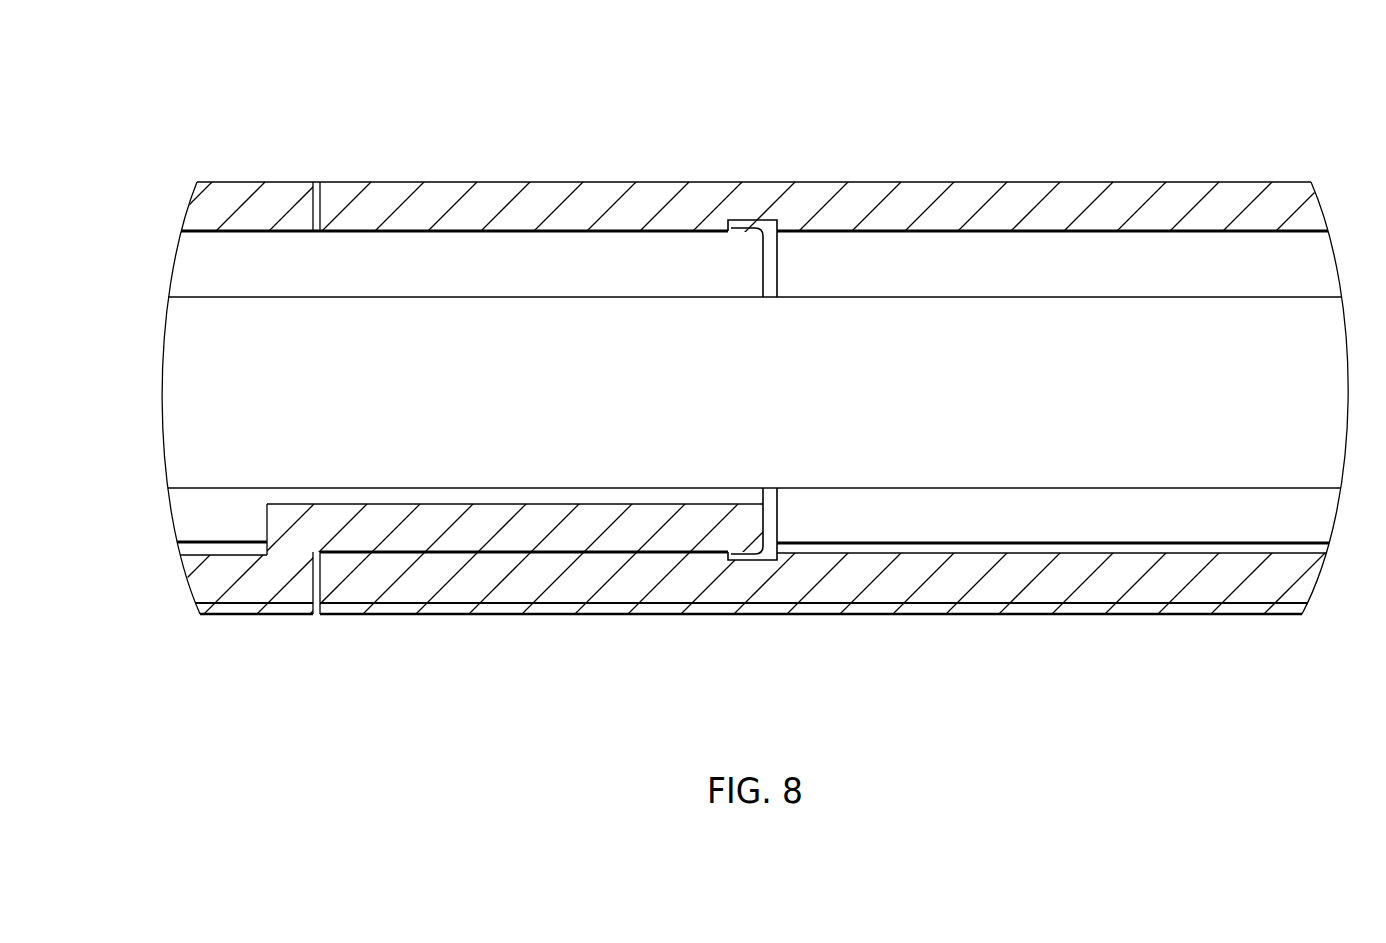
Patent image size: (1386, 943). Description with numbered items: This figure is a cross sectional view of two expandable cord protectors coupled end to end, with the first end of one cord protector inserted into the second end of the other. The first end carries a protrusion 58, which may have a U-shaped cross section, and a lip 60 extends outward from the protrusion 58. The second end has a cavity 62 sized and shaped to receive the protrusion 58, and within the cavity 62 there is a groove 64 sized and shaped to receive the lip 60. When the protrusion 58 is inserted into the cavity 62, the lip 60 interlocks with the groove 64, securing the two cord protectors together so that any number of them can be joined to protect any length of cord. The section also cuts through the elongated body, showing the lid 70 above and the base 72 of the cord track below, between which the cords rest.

The protrusion 58 is at (530, 268).
The lip 60 is at (740, 242).
The cavity 62 is at (757, 405).
The groove 64 is at (756, 219).
The lid 70 is at (1073, 197).
The base 72 is at (581, 586).